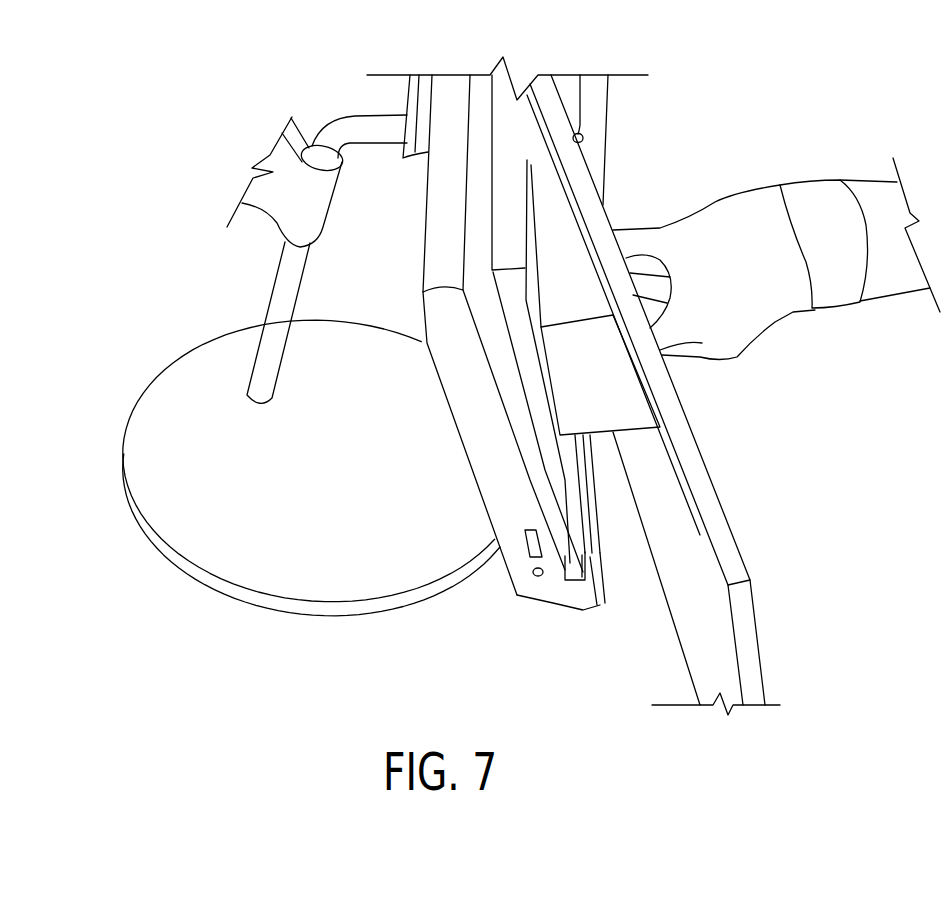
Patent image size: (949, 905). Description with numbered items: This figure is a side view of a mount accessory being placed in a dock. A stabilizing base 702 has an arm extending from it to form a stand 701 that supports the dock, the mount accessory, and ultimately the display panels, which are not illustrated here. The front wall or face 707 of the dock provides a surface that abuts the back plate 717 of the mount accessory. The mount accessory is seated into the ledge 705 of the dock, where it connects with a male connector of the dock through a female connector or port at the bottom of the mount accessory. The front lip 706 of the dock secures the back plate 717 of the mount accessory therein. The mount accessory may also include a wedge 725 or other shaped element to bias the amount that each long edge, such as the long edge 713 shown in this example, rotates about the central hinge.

The stand 701 is at (235, 140).
The stabilizing base 702 is at (192, 378).
The ledge 705 is at (565, 568).
The front lip 706 is at (597, 607).
The front wall or face 707 is at (483, 245).
The long edge 713 is at (712, 510).
The back plate 717 is at (513, 207).
The wedge 725 is at (613, 378).